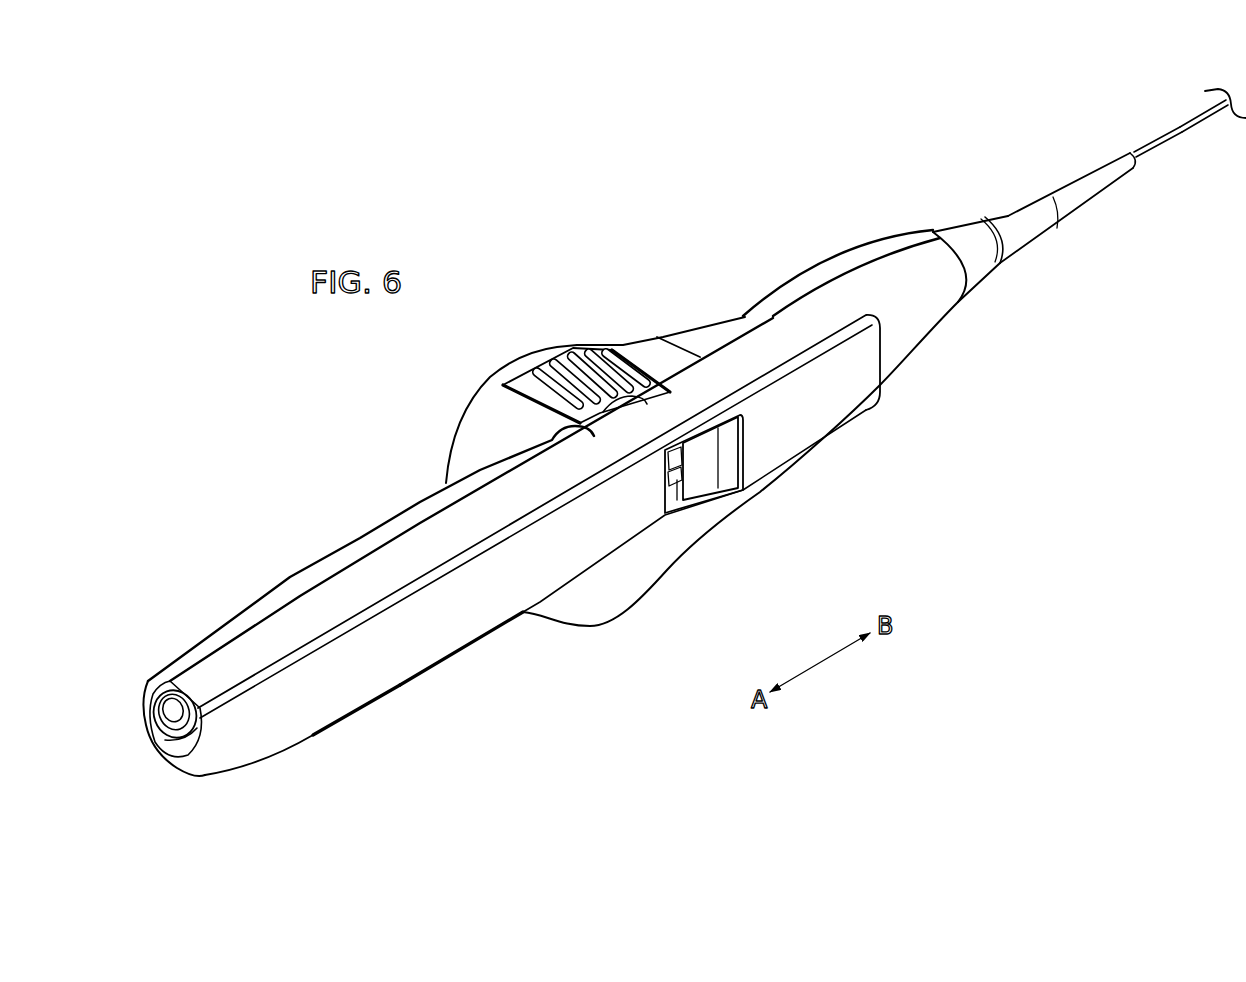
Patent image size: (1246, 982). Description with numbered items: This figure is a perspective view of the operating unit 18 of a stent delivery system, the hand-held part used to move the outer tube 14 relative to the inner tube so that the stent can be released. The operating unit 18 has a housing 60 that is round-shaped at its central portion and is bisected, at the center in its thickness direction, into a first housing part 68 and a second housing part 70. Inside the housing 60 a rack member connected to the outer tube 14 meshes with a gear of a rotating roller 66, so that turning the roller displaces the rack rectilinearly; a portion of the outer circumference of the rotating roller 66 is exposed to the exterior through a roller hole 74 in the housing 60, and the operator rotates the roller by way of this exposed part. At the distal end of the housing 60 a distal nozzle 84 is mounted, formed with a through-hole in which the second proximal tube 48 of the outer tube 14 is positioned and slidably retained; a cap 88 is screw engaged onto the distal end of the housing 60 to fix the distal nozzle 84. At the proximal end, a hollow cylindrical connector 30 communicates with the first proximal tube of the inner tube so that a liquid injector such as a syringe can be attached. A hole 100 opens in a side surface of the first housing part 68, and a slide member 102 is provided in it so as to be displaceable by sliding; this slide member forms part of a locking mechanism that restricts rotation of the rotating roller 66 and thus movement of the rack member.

The outer tube 14 is at (1176, 124).
The operating unit 18 is at (323, 528).
The connector 30 is at (173, 713).
The second proximal tube 48 is at (1199, 118).
The housing 60 is at (332, 705).
The rotating roller 66 is at (571, 370).
The first housing part 68 is at (464, 628).
The second housing part 70 is at (182, 668).
The roller hole 74 is at (522, 385).
The distal nozzle 84 is at (1093, 180).
The cap 88 is at (980, 255).
The hole 100 is at (670, 498).
The slide member 102 is at (702, 472).